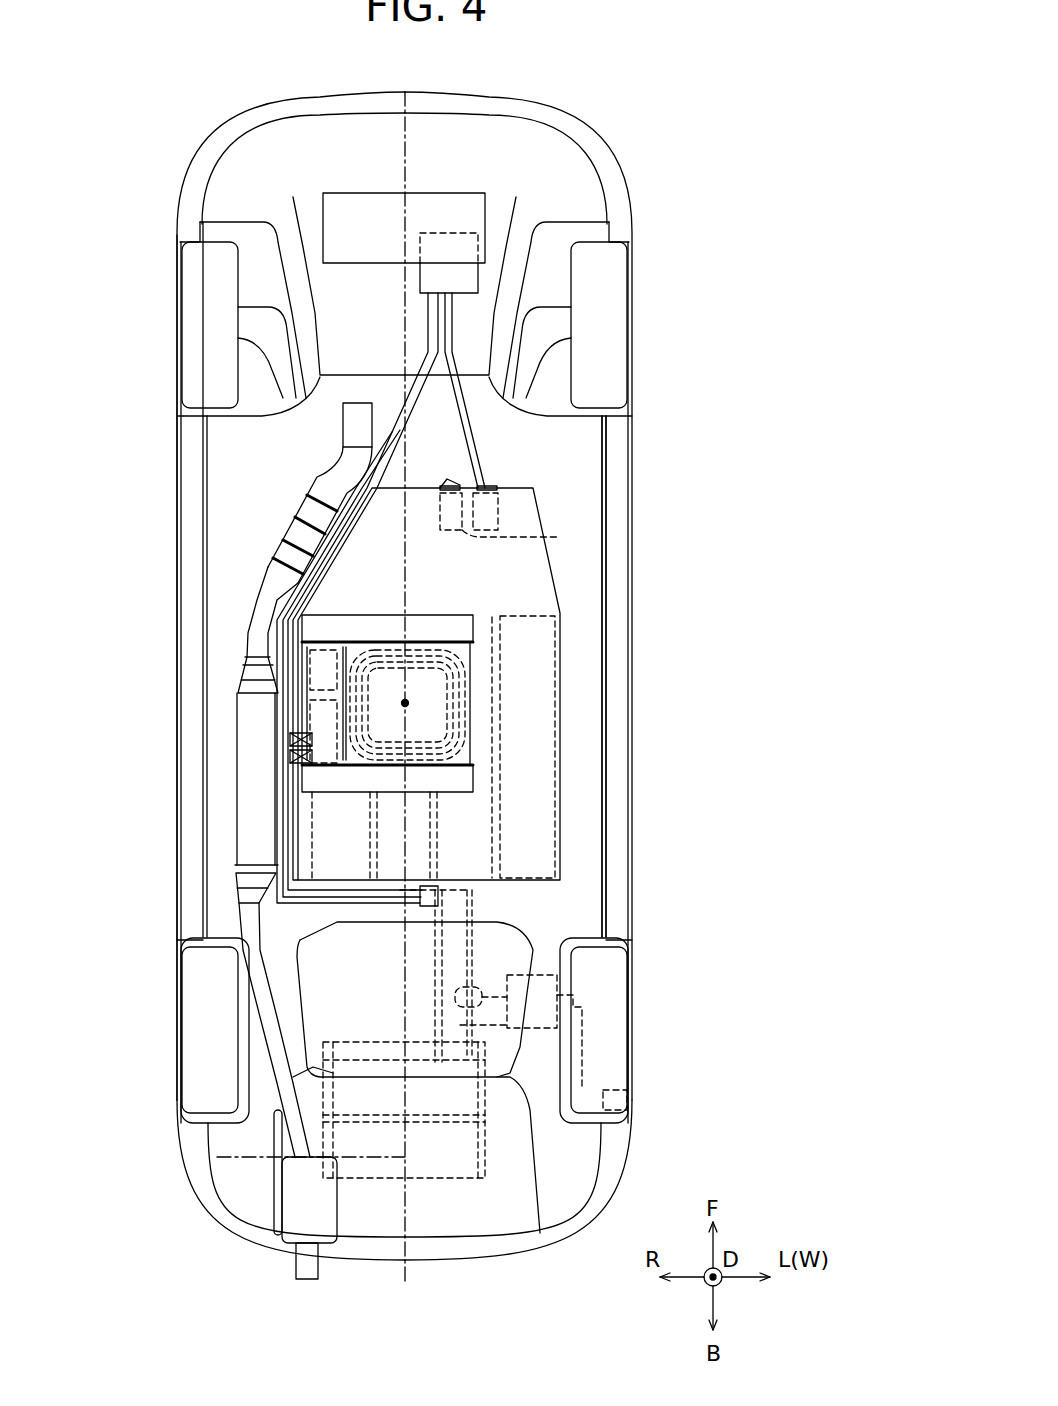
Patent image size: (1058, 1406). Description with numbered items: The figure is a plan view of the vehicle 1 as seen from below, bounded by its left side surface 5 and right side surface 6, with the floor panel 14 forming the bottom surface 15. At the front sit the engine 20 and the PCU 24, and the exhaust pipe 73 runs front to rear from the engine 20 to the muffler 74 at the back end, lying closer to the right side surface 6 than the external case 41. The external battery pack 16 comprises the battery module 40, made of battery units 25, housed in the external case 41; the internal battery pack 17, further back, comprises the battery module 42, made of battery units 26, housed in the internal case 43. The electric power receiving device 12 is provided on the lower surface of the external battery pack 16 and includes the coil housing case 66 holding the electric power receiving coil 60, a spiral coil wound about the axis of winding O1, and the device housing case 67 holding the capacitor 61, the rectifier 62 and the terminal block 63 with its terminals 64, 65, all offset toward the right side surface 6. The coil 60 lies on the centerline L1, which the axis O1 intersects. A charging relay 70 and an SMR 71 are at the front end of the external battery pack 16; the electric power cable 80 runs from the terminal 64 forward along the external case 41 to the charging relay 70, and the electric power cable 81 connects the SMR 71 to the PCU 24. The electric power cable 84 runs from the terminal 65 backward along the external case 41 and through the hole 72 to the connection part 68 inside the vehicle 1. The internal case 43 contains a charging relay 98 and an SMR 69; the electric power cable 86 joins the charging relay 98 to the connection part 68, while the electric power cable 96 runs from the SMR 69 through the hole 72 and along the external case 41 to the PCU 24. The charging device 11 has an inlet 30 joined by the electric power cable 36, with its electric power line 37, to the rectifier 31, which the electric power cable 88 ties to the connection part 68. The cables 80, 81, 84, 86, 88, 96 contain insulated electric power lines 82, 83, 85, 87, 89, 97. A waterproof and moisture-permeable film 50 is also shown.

The vehicle 1 is at (713, 180).
The left side surface 5 is at (633, 830).
The right side surface 6 is at (177, 607).
The charging device 11 is at (625, 1046).
The electric power receiving device 12 is at (473, 752).
The floor panel 14 is at (578, 430).
The bottom surface 15 is at (578, 452).
The external battery pack 16 is at (534, 684).
The internal battery pack 17 is at (272, 1110).
The engine 20 is at (475, 215).
The PCU 24 is at (472, 276).
The battery unit 25 is at (523, 613).
The battery unit 26 is at (430, 1098).
The inlet 30 is at (650, 1104).
The rectifier 31 is at (557, 1000).
The electric power cable 36 is at (633, 1042).
The electric power line 37 is at (587, 1033).
The battery module 40 is at (617, 729).
The external case 41 is at (533, 580).
The battery module 42 is at (291, 1110).
The internal case 43 is at (323, 1060).
The waterproof and moisture-permeable film 50 is at (345, 541).
The electric power receiving coil 60 is at (470, 723).
The capacitor 61 is at (337, 650).
The rectifier 62 is at (310, 707).
The terminal block 63 is at (190, 757).
The terminal 64 is at (293, 740).
The terminal 65 is at (293, 758).
The coil housing case 66 is at (470, 700).
The device housing case 67 is at (450, 650).
The connection part 68 is at (482, 997).
The SMR 69 is at (436, 1063).
The charging relay 70 is at (560, 537).
The SMR 71 is at (462, 507).
The hole 72 is at (425, 878).
The exhaust pipe 73 is at (263, 823).
The muffler 74 is at (295, 1198).
The electric power cable 80 is at (244, 666).
The electric power cable 81 is at (515, 591).
The electric power line 82 is at (305, 578).
The electric power line 83 is at (450, 323).
The electric power cable 84 is at (183, 881).
The electric power line 85 is at (300, 866).
The electric power cable 86 is at (287, 1032).
The electric power line 87 is at (460, 1025).
The electric power cable 88 is at (280, 981).
The electric power line 89 is at (493, 990).
The electric power cable 96 is at (303, 1070).
The electric power line 97 is at (337, 922).
The charging relay 98 is at (473, 1055).
The centerline L1 is at (217, 1157).
The axis of winding O1 is at (405, 703).